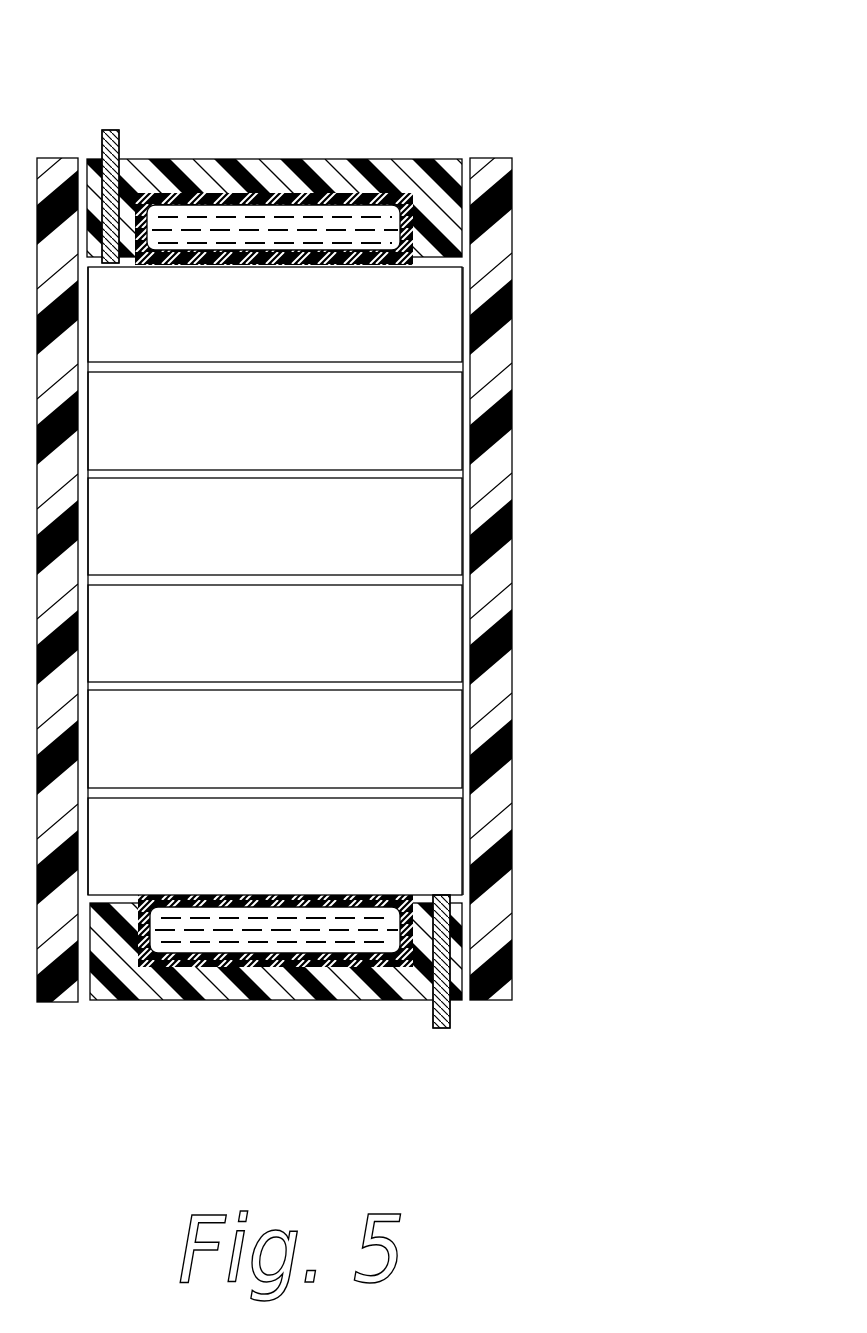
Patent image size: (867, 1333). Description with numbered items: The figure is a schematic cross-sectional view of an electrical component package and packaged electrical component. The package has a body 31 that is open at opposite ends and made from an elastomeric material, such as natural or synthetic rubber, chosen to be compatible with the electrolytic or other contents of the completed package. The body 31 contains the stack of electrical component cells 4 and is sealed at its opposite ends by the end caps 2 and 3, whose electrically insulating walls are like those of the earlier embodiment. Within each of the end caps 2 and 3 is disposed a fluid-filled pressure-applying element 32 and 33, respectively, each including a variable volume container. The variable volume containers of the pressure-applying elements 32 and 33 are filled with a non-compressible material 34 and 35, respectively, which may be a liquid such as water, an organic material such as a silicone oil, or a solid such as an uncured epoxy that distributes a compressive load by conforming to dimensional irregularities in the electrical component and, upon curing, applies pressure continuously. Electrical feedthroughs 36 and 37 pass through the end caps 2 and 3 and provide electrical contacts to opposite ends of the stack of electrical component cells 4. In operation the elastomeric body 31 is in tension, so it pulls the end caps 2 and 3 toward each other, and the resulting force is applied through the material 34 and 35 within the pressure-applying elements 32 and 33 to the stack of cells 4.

The end cap 2 is at (290, 158).
The end cap 3 is at (342, 987).
The stack of electrical component cells 4 is at (412, 510).
The body 31 is at (497, 393).
The fluid-filled pressure-applying element 32 is at (345, 195).
The fluid-filled pressure-applying element 33 is at (197, 1003).
The non-compressible material 34 is at (192, 233).
The non-compressible material 35 is at (222, 935).
The electrical feedthrough 36 is at (104, 130).
The electrical feedthrough 37 is at (450, 1028).